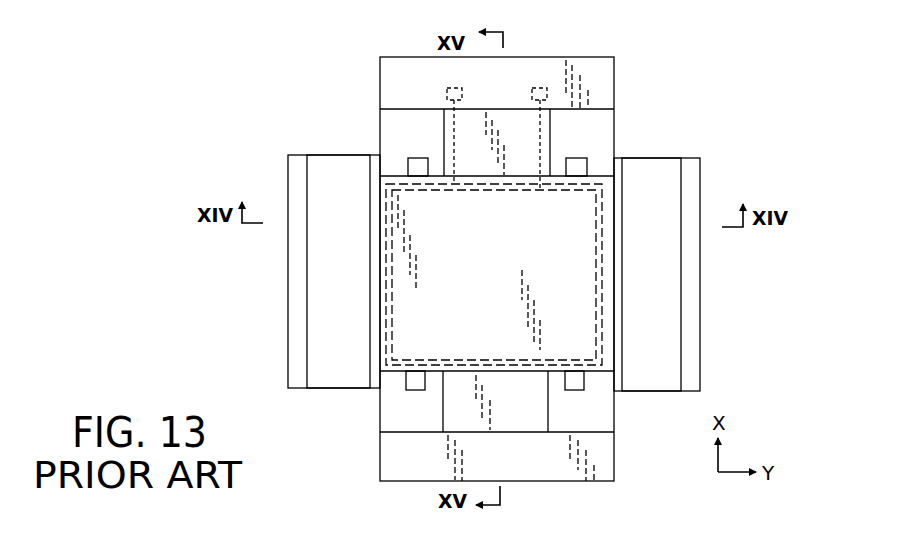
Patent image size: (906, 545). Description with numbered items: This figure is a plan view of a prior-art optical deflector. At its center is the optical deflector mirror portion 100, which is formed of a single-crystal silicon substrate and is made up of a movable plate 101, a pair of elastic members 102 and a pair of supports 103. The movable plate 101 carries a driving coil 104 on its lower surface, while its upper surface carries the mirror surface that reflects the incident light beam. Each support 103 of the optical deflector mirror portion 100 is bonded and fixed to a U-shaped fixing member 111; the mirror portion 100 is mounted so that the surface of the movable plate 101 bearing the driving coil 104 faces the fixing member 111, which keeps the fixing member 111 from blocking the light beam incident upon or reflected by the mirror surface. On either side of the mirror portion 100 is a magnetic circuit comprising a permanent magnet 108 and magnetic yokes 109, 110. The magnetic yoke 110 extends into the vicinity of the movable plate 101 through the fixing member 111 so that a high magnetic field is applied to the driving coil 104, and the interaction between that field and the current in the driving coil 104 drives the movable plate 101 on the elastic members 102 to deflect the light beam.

The optical deflector mirror portion 100 is at (577, 57).
The movable plate 101 is at (583, 313).
The elastic member 102 is at (525, 139).
The support 103 is at (603, 76).
The driving coil 104 is at (462, 360).
The permanent magnet 108 is at (328, 246).
The magnetic yoke 109 is at (371, 187).
The magnetic yoke 110 is at (418, 176).
The fixing member 111 is at (611, 115).